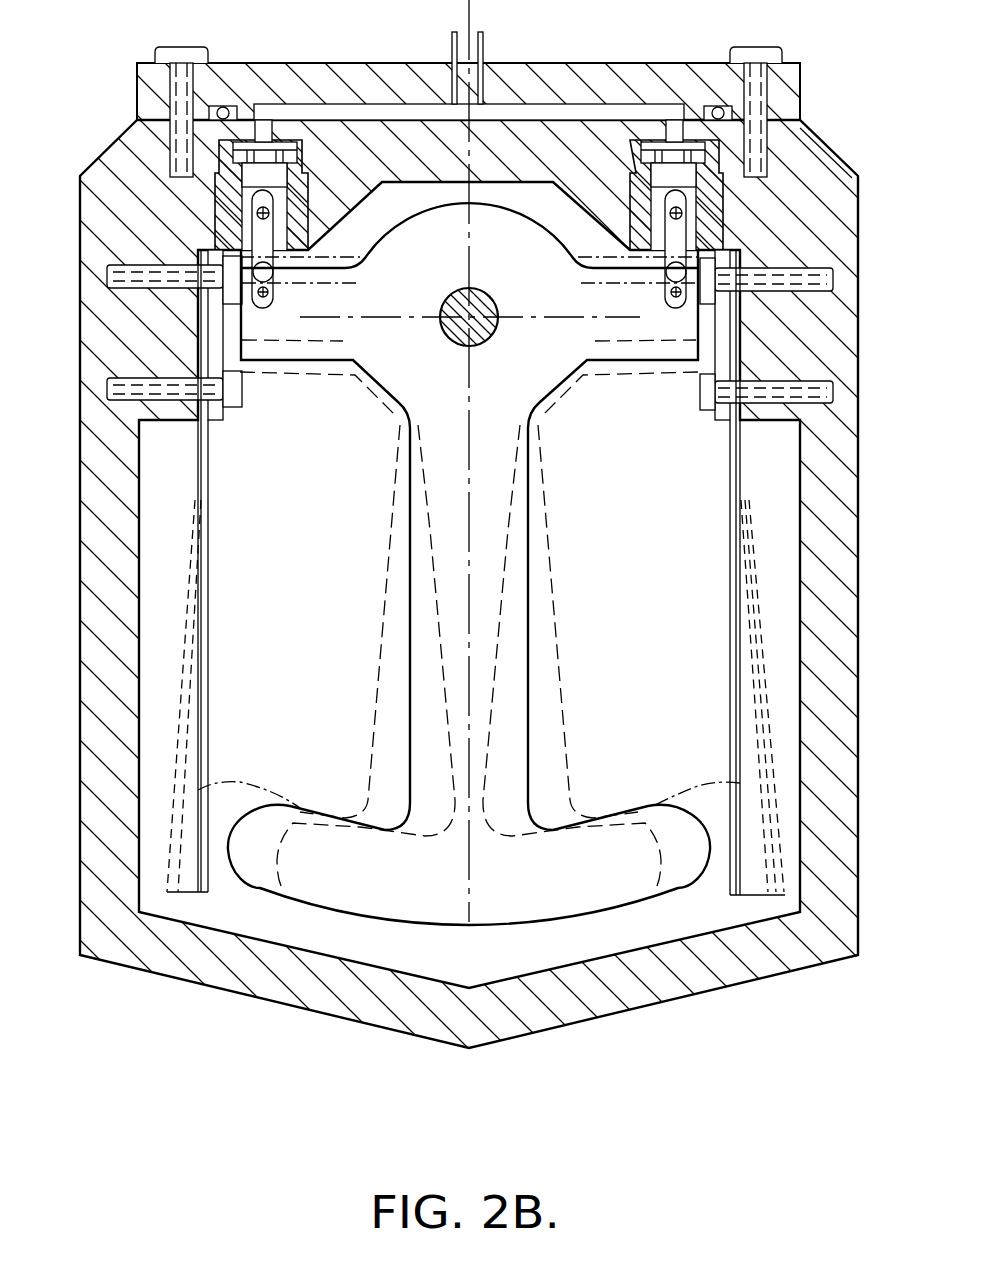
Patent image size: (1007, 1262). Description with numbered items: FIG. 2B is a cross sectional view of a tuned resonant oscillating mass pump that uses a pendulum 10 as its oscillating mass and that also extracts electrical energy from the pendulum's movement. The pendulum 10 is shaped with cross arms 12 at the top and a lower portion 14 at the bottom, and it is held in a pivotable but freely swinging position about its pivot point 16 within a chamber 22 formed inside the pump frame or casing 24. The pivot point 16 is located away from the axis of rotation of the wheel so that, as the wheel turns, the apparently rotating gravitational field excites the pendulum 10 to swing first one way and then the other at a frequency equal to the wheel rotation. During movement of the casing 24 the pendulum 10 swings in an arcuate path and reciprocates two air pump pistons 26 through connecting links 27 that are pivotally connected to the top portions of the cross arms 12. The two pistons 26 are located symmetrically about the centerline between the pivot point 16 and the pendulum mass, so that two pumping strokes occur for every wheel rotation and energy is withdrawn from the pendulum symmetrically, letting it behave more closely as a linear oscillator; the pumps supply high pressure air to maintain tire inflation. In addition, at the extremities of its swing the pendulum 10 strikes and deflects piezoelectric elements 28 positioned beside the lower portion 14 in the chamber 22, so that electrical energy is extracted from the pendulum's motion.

The pendulum 10 is at (328, 602).
The cross arms 12 is at (620, 365).
The lower portion 14 is at (393, 923).
The pivot point 16 is at (498, 297).
The chamber 22 is at (673, 525).
The pump frame or casing 24 is at (858, 528).
The air pump pistons 26 is at (236, 197).
The connecting links 27 is at (722, 238).
The piezoelectric elements 28 is at (208, 688).